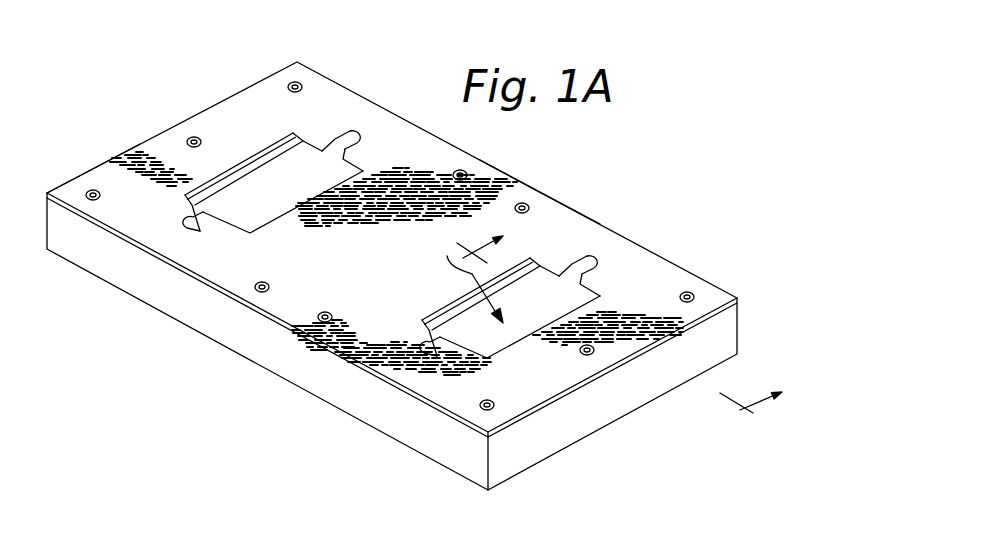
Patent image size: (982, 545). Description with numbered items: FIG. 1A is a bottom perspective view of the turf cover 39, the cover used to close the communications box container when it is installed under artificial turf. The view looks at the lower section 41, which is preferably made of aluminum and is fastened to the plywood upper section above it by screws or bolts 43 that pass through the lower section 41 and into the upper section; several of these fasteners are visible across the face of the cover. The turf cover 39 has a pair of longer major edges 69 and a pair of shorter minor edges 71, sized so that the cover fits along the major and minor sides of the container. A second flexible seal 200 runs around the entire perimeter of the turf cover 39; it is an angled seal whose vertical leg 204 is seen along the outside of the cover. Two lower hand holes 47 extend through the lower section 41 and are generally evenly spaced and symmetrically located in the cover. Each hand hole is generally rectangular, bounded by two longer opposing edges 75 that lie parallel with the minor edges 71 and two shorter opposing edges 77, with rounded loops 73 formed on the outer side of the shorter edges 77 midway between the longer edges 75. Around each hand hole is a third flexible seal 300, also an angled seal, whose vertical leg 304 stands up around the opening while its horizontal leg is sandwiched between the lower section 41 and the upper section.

The turf cover 39 is at (666, 236).
The lower section 41 is at (174, 140).
The screws or bolts 43 is at (294, 83).
The lower hand holes 47 is at (465, 279).
The major edges 69 is at (548, 196).
The minor edges 71 is at (92, 169).
The rounded loops 73 is at (197, 212).
The longer opposing edges 75 is at (286, 137).
The shorter opposing edges 77 is at (314, 138).
The second flexible seal 200 is at (614, 440).
The vertical leg 204 is at (357, 406).
The third flexible seal 300 is at (220, 193).
The vertical leg 304 is at (266, 157).